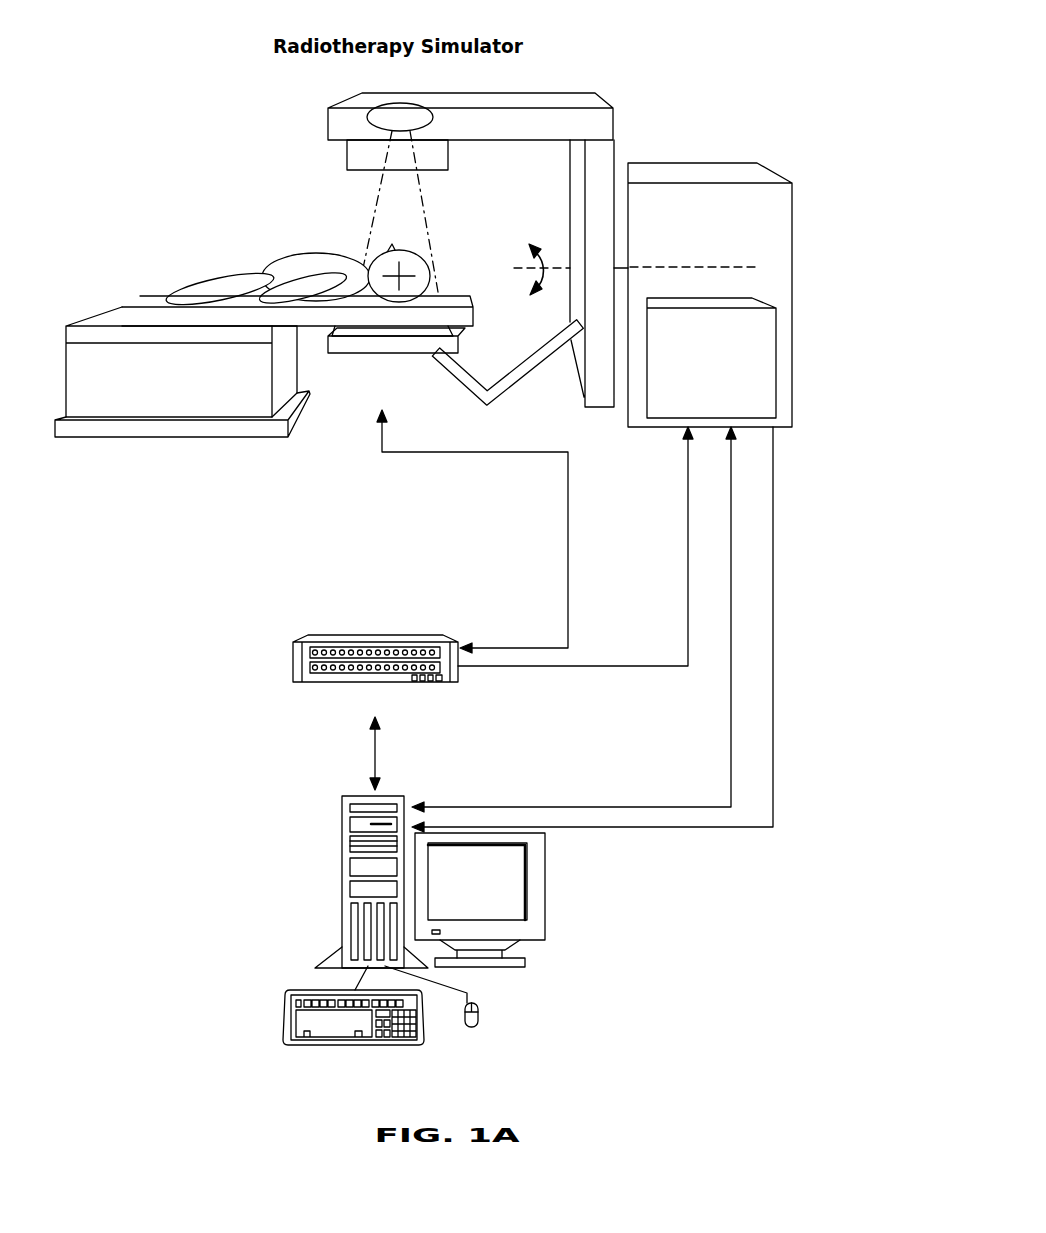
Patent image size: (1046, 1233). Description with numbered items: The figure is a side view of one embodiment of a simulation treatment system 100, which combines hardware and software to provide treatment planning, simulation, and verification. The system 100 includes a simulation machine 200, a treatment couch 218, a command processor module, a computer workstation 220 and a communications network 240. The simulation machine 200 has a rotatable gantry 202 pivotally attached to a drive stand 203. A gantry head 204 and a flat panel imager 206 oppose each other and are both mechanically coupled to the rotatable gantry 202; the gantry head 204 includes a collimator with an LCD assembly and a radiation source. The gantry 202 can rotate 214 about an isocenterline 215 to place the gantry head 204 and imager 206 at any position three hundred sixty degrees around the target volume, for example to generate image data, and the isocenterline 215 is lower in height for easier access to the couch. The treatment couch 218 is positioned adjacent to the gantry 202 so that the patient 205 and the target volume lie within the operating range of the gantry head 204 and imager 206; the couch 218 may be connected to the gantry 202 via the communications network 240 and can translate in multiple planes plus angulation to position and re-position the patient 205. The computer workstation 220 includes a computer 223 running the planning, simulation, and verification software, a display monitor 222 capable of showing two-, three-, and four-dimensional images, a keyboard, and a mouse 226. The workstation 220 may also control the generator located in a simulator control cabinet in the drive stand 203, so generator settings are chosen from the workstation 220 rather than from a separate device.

The simulation treatment system 100 is at (668, 38).
The simulation machine 200 is at (667, 130).
The rotatable gantry 202 is at (602, 88).
The drive stand 203 is at (757, 150).
The gantry head 204 is at (337, 152).
The patient 205 is at (273, 247).
The flat panel imager 206 is at (455, 363).
The rotation 214 is at (527, 258).
The isocenterline 215 is at (526, 280).
The treatment couch 218 is at (137, 290).
The computer workstation 220 is at (310, 870).
The display monitor 222 is at (557, 932).
The computer 223 is at (337, 793).
The mouse 226 is at (483, 1015).
The communications network 240 is at (688, 551).